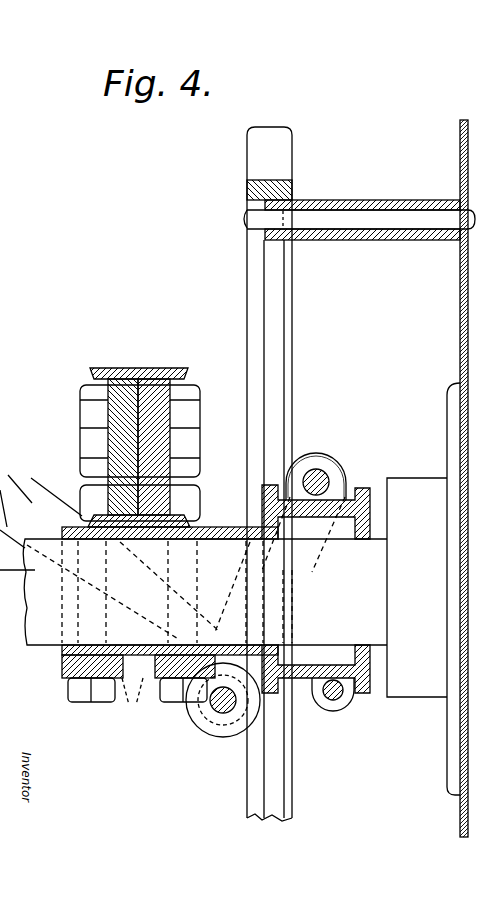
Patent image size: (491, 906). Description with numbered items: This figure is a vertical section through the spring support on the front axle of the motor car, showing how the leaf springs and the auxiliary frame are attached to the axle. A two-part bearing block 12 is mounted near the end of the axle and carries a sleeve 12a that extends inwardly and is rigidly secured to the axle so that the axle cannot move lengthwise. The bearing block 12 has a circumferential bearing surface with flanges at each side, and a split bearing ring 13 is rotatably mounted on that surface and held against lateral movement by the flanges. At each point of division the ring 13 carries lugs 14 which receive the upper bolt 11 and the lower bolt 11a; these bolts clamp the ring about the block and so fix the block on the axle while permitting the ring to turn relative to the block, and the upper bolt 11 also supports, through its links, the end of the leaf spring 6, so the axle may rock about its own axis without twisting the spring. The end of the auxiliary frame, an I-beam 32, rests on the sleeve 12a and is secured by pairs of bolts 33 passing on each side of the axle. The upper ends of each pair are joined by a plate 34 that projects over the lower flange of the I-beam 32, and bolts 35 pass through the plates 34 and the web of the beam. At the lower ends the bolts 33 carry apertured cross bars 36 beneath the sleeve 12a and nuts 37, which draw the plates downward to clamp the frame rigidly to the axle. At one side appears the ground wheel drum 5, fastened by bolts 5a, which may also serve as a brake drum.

The ring or drum 5 is at (328, 239).
The bolts 5a is at (363, 213).
The semielliptical leaf springs 6 is at (172, 549).
The bolt 11 is at (323, 476).
The bolt 11a is at (328, 704).
The bearing block 12 is at (371, 663).
The sleeve 12a is at (216, 527).
The split bearing ring 13 is at (352, 500).
The lugs 14 is at (300, 456).
The I-beam 32 is at (140, 368).
The bolts 33 is at (130, 702).
The plate 34 is at (108, 415).
The bolts 35 is at (196, 396).
The apertured cross bars 36 is at (155, 648).
The nuts 37 is at (86, 695).